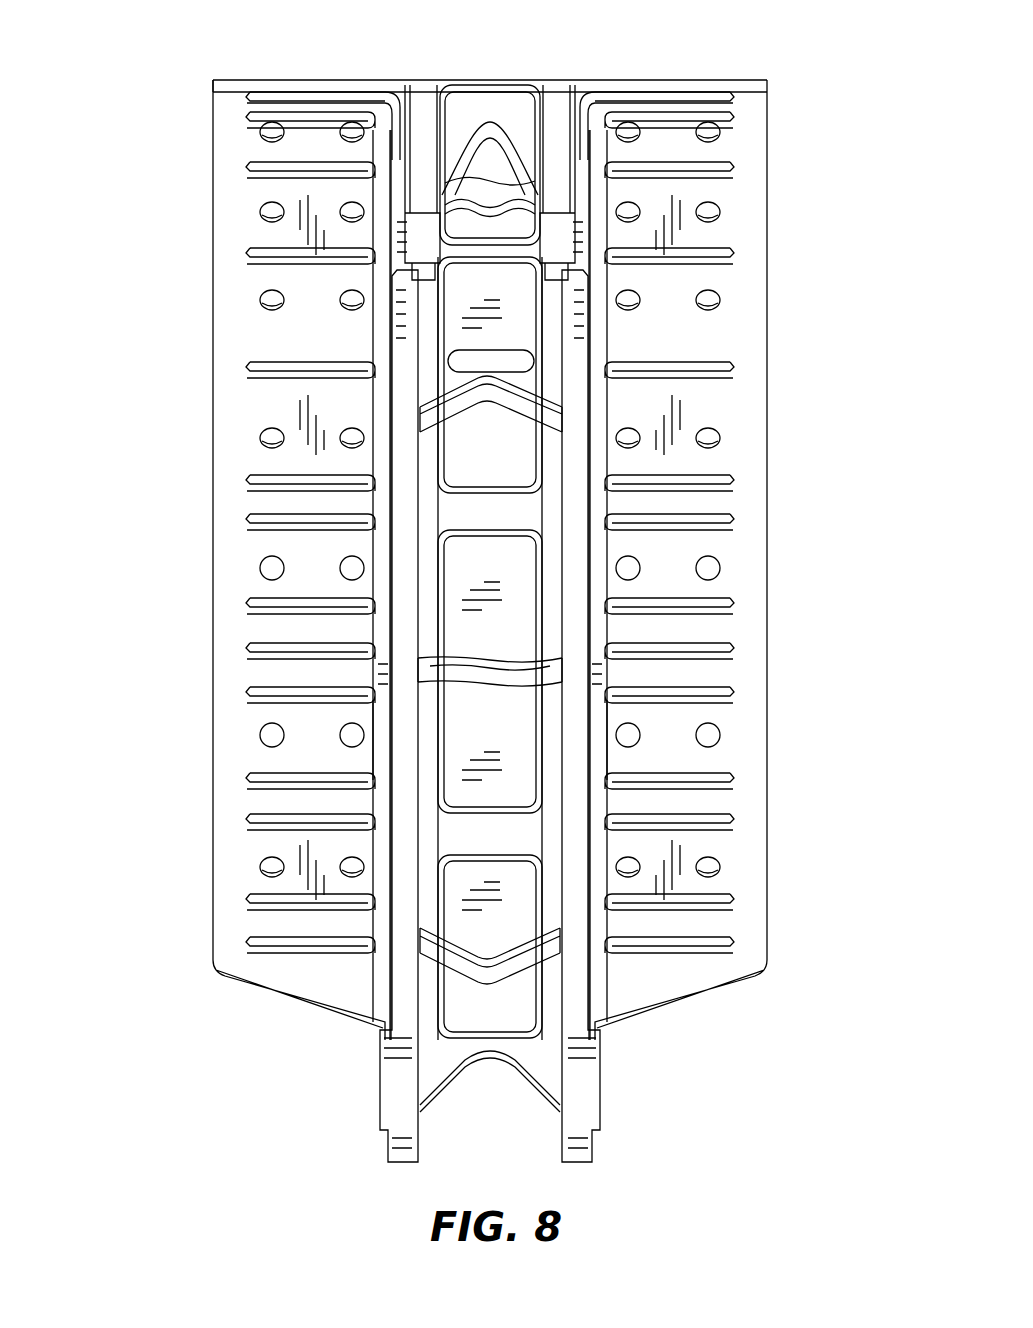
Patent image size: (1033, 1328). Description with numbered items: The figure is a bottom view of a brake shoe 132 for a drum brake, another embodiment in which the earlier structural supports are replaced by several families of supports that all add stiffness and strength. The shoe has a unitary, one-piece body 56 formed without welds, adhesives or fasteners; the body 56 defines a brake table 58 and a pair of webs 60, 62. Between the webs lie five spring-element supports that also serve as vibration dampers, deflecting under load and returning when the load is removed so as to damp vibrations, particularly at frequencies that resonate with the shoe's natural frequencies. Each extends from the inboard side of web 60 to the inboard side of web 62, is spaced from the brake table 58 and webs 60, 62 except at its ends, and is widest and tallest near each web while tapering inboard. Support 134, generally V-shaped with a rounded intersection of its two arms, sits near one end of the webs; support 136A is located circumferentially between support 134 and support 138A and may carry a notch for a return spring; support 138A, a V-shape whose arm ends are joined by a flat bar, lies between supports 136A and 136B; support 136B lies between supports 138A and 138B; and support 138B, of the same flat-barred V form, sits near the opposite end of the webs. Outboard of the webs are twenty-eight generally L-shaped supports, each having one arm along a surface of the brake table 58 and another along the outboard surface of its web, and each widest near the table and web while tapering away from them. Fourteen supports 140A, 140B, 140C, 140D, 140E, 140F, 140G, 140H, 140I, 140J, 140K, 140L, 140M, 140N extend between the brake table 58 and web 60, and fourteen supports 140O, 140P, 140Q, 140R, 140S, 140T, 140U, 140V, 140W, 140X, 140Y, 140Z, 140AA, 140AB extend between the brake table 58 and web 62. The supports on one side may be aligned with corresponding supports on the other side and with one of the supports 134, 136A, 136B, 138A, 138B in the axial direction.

The brake shoe 132 is at (190, 490).
The support 134 is at (494, 130).
The support 136A is at (500, 197).
The support 136B is at (485, 665).
The support 138A is at (500, 405).
The support 138B is at (490, 955).
The body 56 is at (246, 723).
The brake table 58 is at (750, 400).
The web 60 is at (405, 739).
The web 62 is at (605, 735).
The support 140A is at (268, 100).
The support 140B is at (265, 114).
The support 140C is at (258, 170).
The support 140D is at (262, 252).
The support 140E is at (258, 370).
The support 140F is at (258, 480).
The support 140G is at (252, 524).
The support 140H is at (258, 605).
The support 140I is at (262, 650).
The support 140J is at (265, 692).
The support 140K is at (262, 780).
The support 140L is at (262, 822).
The support 140M is at (262, 900).
The support 140N is at (262, 943).
The support 140O is at (720, 100).
The support 140P is at (722, 117).
The support 140Q is at (715, 170).
The support 140R is at (715, 255).
The support 140S is at (718, 370).
The support 140T is at (722, 483).
The support 140U is at (722, 520).
The support 140V is at (722, 604).
The support 140W is at (722, 650).
The support 140X is at (722, 692).
The support 140Y is at (722, 780).
The support 140Z is at (722, 822).
The support 140AA is at (728, 900).
The support 140AB is at (722, 943).